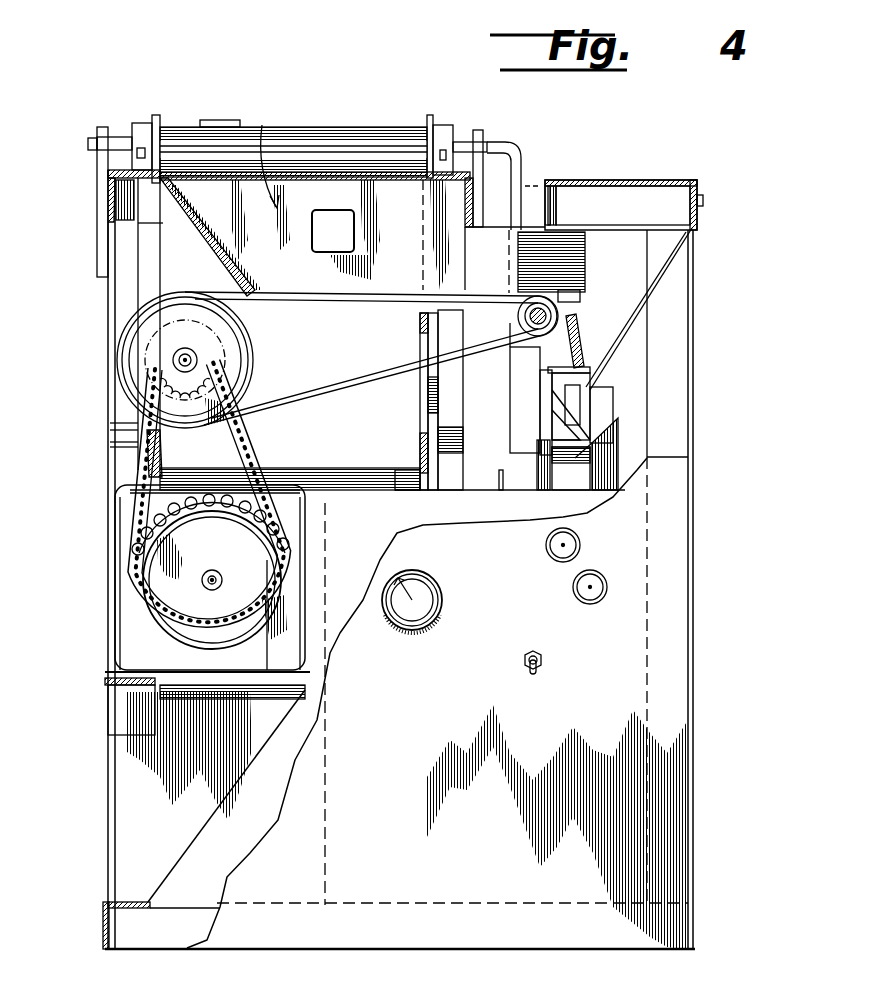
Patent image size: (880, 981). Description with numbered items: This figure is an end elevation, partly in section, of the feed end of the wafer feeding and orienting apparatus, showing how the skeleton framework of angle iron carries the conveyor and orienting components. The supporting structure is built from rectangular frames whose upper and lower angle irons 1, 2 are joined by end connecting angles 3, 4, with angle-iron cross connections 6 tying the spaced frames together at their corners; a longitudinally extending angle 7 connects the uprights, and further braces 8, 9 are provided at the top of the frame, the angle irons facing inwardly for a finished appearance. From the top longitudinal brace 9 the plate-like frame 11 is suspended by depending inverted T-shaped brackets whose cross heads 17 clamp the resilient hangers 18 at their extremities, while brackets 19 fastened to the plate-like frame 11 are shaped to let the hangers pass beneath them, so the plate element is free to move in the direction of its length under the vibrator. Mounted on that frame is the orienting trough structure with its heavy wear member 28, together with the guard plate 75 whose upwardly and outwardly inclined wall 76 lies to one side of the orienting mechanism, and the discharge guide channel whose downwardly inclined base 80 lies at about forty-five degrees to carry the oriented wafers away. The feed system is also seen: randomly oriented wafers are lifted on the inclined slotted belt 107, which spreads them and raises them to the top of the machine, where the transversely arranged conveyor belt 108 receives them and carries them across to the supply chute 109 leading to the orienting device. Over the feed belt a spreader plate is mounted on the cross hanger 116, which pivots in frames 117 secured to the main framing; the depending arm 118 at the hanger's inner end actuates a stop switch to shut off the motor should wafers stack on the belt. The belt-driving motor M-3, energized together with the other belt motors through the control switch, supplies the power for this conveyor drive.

The upper angle iron 1 is at (108, 190).
The lower angle iron 2 is at (103, 925).
The end connecting angle 3 is at (668, 442).
The end connecting angle 4 is at (120, 252).
The cross connection angle iron 6 is at (612, 185).
The longitudinally extending angle 7 is at (105, 705).
The brace 8 is at (468, 203).
The top longitudinal brace 9 is at (545, 195).
The plate-like frame 11 is at (545, 422).
The cross head 17 is at (588, 260).
The resilient hanger 18 is at (567, 306).
The bracket 19 is at (525, 368).
The wear member 28 is at (557, 400).
The guard plate 75 is at (575, 472).
The inclined wall of guard plate 76 is at (600, 480).
The inclined base of guide channel 80 is at (510, 478).
The inclined belt 107 is at (360, 130).
The transverse conveyor belt 108 is at (415, 283).
The supply chute 109 is at (642, 310).
The cross hanger 116 is at (90, 140).
The frame 117 is at (105, 125).
The depending arm 118 is at (524, 162).
The belt-driving motor M-3 is at (290, 514).